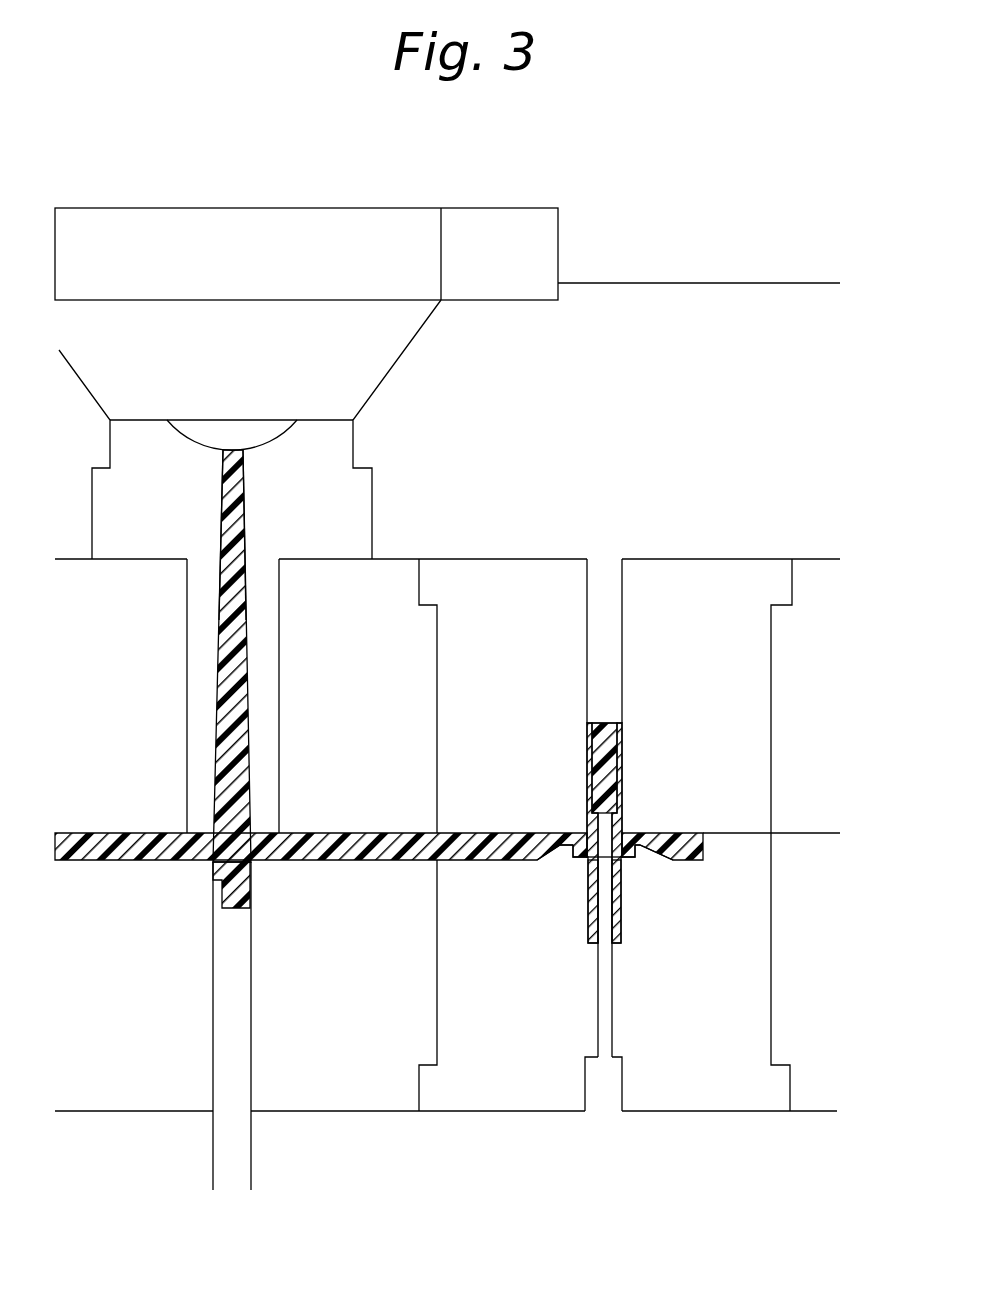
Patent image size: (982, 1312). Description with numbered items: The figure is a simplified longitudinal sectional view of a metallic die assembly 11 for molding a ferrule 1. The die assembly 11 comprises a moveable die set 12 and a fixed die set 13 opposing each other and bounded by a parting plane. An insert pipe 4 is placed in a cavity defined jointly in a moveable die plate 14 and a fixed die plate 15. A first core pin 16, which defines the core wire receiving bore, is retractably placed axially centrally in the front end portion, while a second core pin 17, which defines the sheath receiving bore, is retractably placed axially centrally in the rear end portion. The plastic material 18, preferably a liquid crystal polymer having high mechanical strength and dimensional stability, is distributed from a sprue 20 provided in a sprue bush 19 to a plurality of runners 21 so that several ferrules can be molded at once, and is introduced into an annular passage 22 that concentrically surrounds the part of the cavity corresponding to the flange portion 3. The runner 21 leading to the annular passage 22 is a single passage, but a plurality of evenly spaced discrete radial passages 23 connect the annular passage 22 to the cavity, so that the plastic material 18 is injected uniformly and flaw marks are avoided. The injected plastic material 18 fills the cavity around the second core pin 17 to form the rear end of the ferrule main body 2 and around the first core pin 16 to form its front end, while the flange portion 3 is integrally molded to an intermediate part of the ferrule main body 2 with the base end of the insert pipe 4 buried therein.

The ferrule 1 is at (672, 725).
The ferrule main body 2 is at (588, 927).
The flange portion 3 is at (623, 857).
The insert pipe 4 is at (620, 760).
The metallic die assembly 11 is at (680, 258).
The moveable die set 12 is at (773, 920).
The fixed die set 13 is at (773, 725).
The moveable die plate 14 is at (507, 1054).
The fixed die plate 15 is at (519, 721).
The first core pin 16 is at (622, 790).
The second core pin 17 is at (605, 922).
The plastic material 18 is at (245, 755).
The sprue bush 19 is at (345, 505).
The sprue 20 is at (243, 550).
The runner 21 is at (133, 853).
The annular passage 22 is at (575, 848).
The discrete radial passages 23 is at (570, 837).